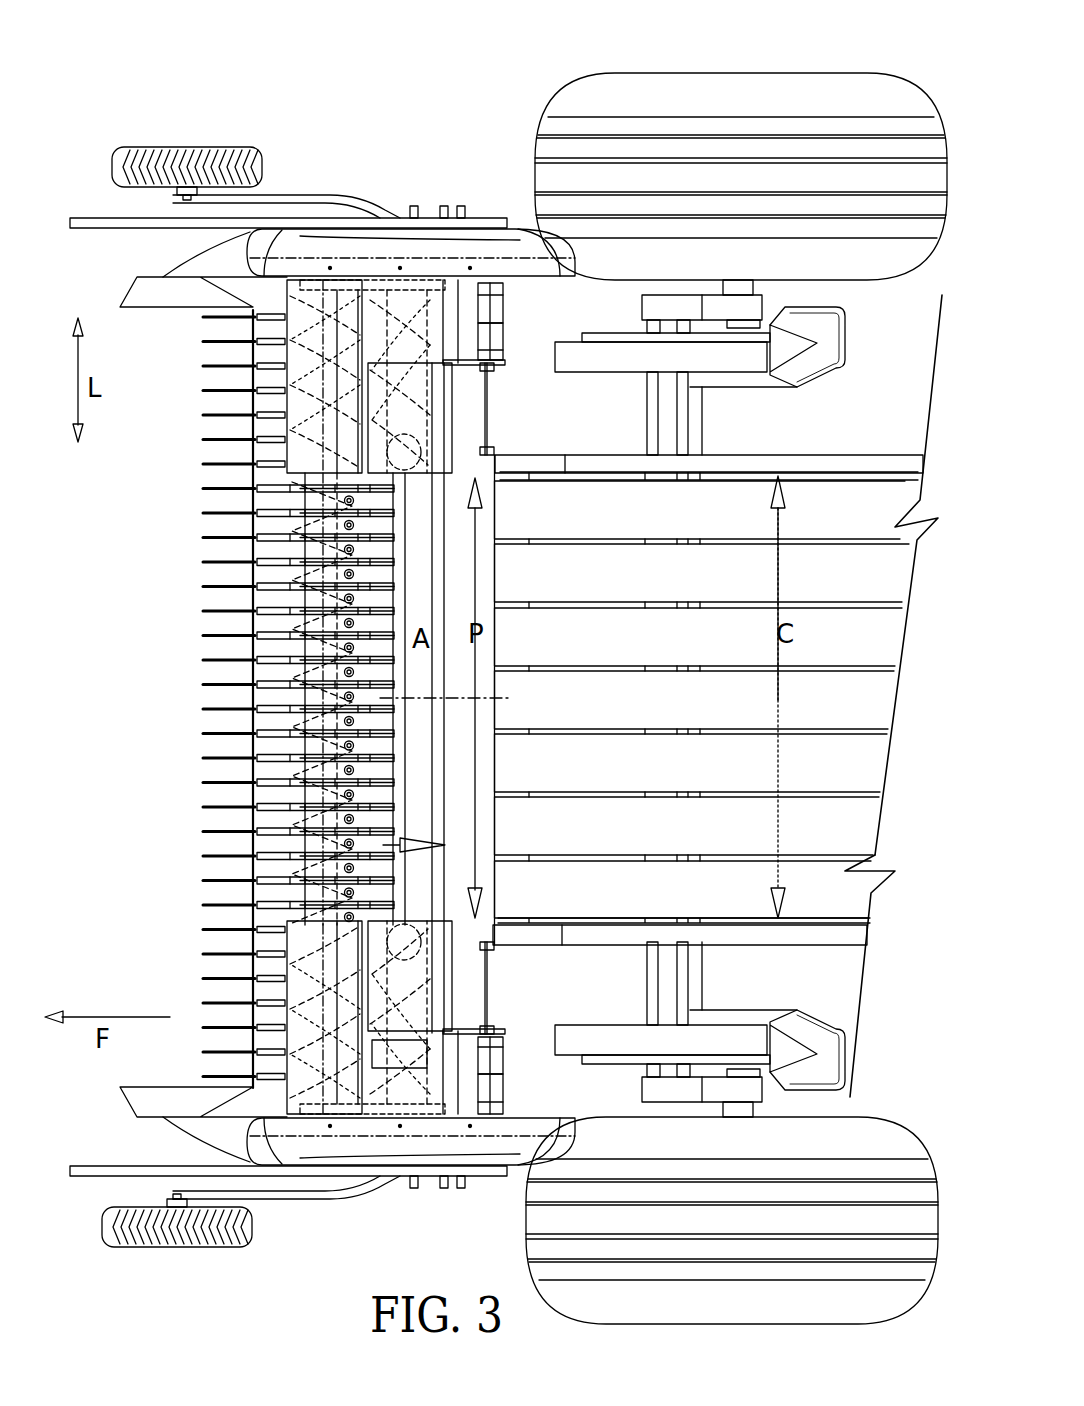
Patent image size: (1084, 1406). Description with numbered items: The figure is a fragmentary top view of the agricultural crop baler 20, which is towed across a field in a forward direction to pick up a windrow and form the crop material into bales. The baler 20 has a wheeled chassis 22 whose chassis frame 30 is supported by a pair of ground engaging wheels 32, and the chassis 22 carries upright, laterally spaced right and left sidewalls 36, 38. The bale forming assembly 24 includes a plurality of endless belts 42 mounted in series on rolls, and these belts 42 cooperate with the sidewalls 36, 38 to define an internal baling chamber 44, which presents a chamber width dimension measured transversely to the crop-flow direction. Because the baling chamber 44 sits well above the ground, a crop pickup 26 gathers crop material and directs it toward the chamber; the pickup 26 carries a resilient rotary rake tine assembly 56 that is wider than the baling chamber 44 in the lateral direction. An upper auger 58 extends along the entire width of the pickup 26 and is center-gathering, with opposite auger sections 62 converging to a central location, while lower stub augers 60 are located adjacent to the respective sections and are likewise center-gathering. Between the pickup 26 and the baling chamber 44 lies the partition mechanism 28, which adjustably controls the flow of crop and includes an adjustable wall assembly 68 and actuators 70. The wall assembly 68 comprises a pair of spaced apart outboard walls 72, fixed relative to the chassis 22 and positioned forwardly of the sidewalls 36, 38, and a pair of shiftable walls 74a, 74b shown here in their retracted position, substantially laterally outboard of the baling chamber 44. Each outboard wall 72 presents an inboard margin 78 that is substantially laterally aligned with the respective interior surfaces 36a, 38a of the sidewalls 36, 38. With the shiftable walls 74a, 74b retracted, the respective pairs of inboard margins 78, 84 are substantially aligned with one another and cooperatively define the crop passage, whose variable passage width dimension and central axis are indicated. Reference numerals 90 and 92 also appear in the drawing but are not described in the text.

The baler 20 is at (746, 50).
The wheeled chassis 22 is at (745, 1092).
The bale forming assembly 24 is at (857, 903).
The crop pickup 26 is at (262, 548).
The partition mechanism 28 is at (496, 697).
The chassis frame 30 is at (633, 350).
The ground engaging wheels 32 is at (568, 97).
The right sidewall 36 is at (873, 452).
The interior surface 36a is at (718, 478).
The left sidewall 38 is at (765, 947).
The interior surface 38a is at (627, 925).
The endless belts 42 is at (925, 484).
The baling chamber 44 is at (851, 947).
The rotary rake tine assembly 56 is at (215, 908).
The upper auger 58 is at (212, 323).
The lower stub augers 60 is at (412, 284).
The auger sections 62 is at (318, 290).
The adjustable wall assembly 68 is at (442, 380).
The actuators 70 is at (497, 301).
The outboard walls 72 is at (430, 1060).
The shiftable wall 74a is at (432, 420).
The shiftable wall 74b is at (432, 988).
The inboard margin 78 is at (248, 698).
The inboard margin 84 is at (290, 510).
The coupling 90 is at (497, 333).
The shaft end 92 is at (482, 444).